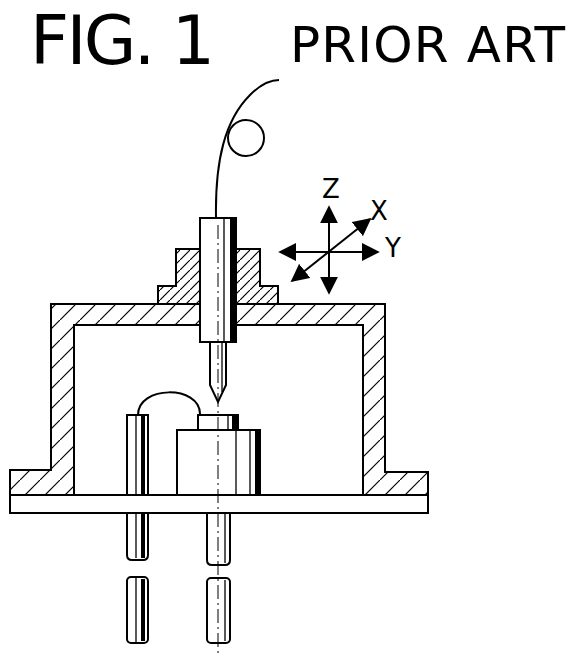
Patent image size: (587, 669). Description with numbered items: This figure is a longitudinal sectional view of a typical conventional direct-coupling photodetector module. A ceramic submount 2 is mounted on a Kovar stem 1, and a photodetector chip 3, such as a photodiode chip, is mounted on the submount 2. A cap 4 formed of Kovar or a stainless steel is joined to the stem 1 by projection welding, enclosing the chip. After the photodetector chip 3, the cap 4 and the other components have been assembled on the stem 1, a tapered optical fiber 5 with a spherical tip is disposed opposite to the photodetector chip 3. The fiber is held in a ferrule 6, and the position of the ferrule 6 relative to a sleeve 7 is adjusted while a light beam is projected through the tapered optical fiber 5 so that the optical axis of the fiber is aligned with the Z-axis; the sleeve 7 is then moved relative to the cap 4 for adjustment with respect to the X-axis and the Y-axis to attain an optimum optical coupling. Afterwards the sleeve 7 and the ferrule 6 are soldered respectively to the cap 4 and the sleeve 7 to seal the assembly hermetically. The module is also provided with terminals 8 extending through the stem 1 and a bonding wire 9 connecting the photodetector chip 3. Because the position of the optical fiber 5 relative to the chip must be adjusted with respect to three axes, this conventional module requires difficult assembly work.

The Kovar stem 1 is at (332, 507).
The ceramic submount 2 is at (262, 454).
The photodetector chip 3 is at (240, 417).
The cap 4 is at (378, 374).
The tapered optical fiber 5 is at (223, 364).
The ferrule 6 is at (205, 230).
The sleeve 7 is at (173, 268).
The terminals 8 is at (233, 608).
The bonding wire 9 is at (165, 392).